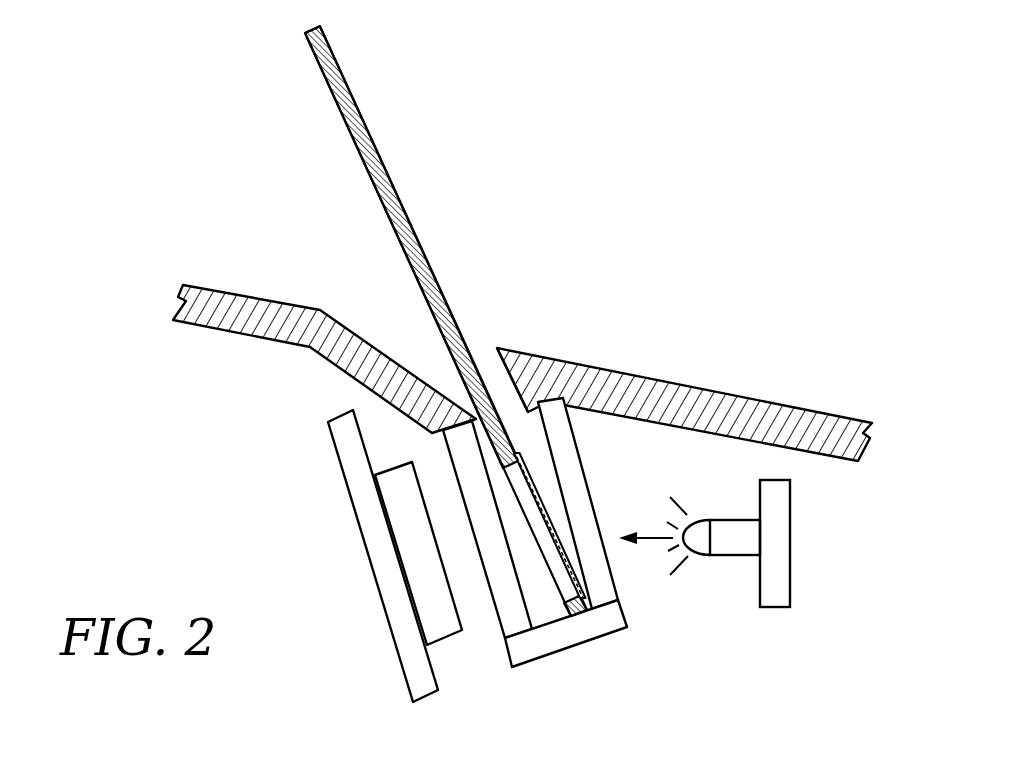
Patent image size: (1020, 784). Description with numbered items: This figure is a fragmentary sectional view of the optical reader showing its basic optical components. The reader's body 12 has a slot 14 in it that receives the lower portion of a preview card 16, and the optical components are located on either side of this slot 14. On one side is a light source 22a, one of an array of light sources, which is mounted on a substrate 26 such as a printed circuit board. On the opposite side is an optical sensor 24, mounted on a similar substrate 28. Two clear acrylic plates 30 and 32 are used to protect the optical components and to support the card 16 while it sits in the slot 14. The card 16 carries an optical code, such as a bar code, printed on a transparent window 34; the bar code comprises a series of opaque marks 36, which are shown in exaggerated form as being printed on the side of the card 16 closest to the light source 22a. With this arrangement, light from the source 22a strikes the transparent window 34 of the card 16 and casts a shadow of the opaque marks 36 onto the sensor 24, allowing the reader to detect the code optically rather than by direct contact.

The body 12 is at (233, 294).
The slot 14 is at (503, 360).
The preview card 16 is at (408, 212).
The light source 22a is at (742, 555).
The optical sensor 24 is at (400, 453).
The substrate 26 is at (790, 532).
The substrate 28 is at (355, 513).
The clear plate 30 is at (616, 588).
The clear plate 32 is at (503, 622).
The transparent window 34 is at (560, 598).
The opaque marks 36 is at (533, 478).